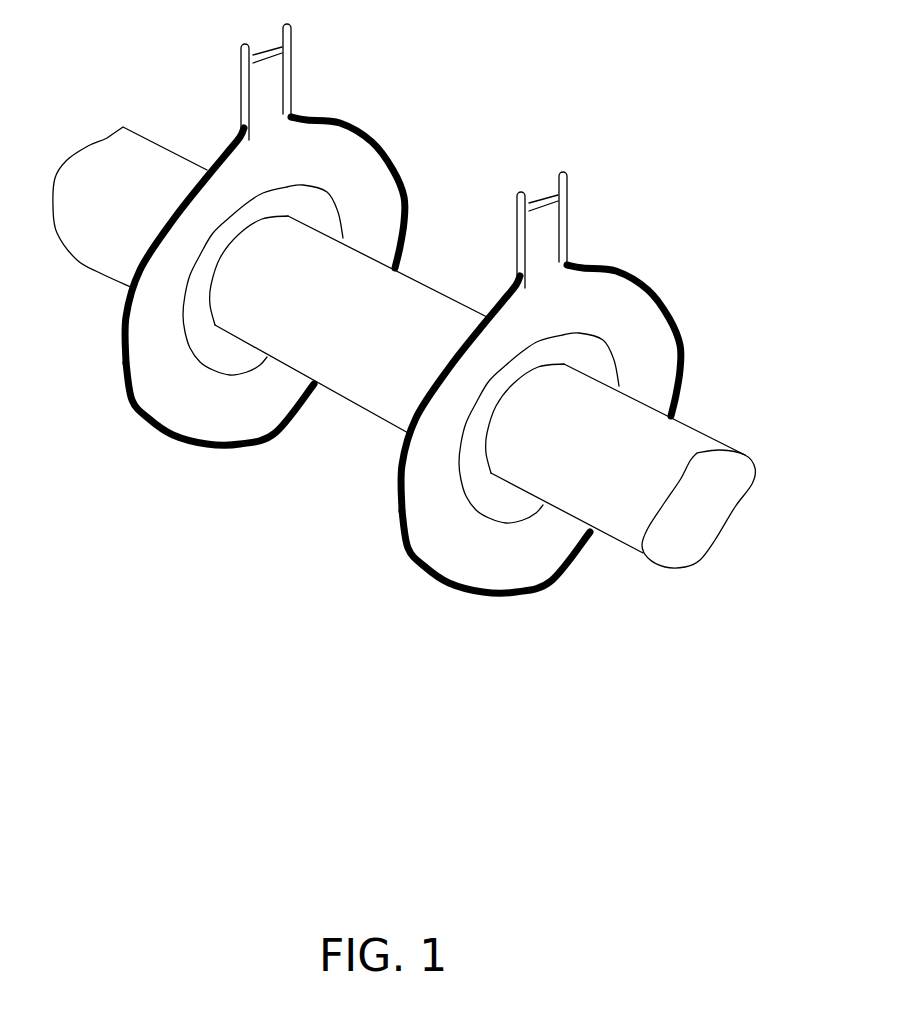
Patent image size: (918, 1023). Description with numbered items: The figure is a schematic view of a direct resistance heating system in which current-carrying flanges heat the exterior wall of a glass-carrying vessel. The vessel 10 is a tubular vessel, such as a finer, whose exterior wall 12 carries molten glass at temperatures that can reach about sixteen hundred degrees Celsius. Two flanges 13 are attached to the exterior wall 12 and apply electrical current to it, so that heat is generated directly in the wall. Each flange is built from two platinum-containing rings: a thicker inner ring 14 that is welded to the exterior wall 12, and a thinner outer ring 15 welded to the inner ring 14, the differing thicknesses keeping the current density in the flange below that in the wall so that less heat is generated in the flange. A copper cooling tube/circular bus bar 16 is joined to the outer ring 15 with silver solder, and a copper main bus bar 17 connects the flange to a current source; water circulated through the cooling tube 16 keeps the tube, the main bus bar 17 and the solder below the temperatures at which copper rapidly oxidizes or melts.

The vessel 10 is at (712, 517).
The exterior wall 12 is at (353, 381).
The flange 13 is at (313, 95).
The inner ring 14 is at (277, 202).
The outer ring 15 is at (320, 115).
The cooling tube/circular bus bar 16 is at (150, 424).
The main bus bar 17 is at (268, 76).